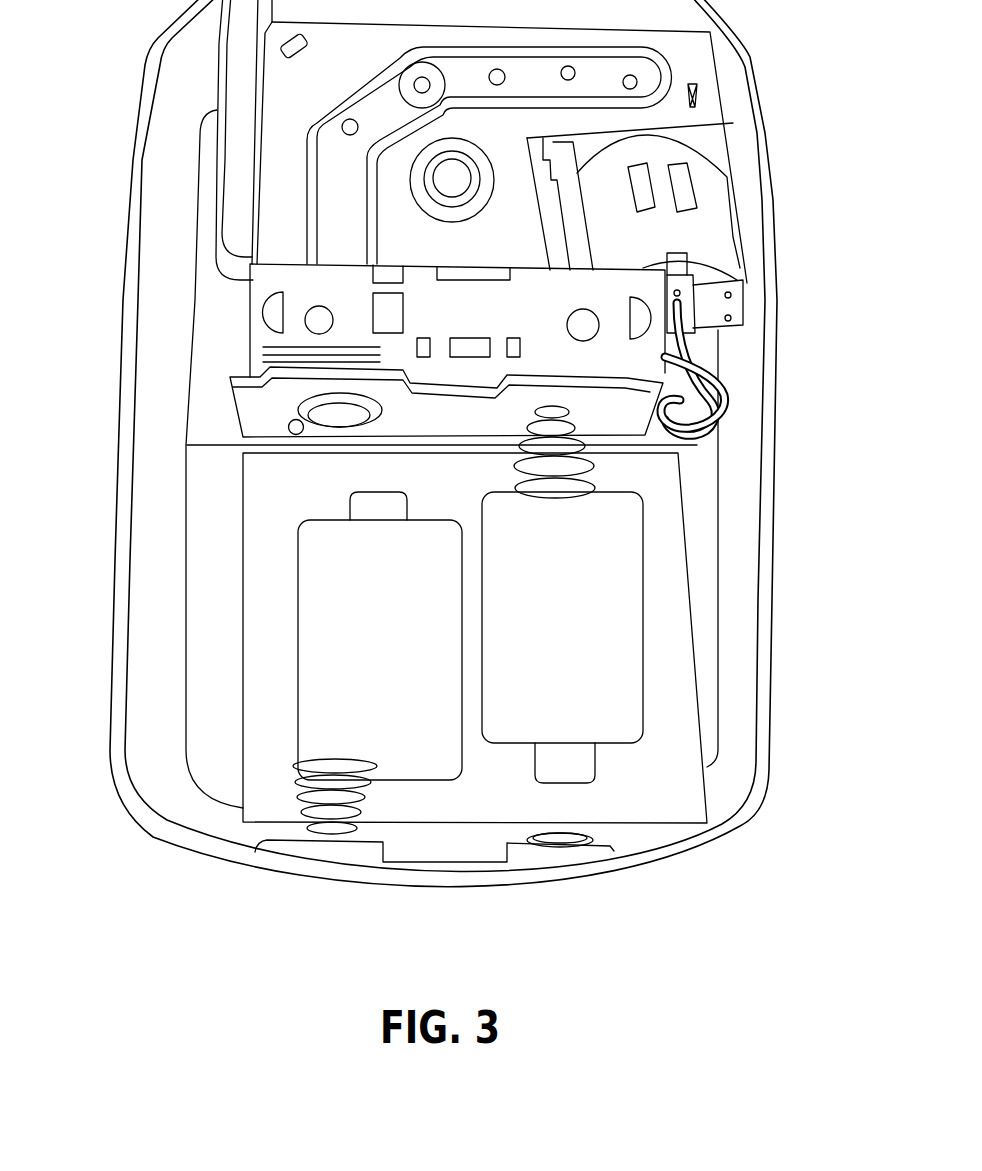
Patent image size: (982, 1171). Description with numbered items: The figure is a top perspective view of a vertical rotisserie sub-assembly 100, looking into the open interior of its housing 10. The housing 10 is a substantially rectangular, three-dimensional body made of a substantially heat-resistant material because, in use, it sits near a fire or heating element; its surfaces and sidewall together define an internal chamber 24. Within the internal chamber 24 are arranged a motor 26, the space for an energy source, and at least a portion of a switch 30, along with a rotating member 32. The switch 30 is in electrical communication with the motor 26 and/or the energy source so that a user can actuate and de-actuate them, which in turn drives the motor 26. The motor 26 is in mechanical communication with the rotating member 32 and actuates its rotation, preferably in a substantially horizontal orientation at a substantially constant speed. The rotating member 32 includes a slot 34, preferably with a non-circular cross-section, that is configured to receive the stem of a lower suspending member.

The vertical rotisserie sub-assembly 100 is at (118, 845).
The housing 10 is at (197, 852).
The internal chamber 24 is at (267, 710).
The motor 26 is at (710, 228).
The switch 30 is at (500, 305).
The rotating member 32 is at (433, 195).
The slot 34 is at (448, 180).